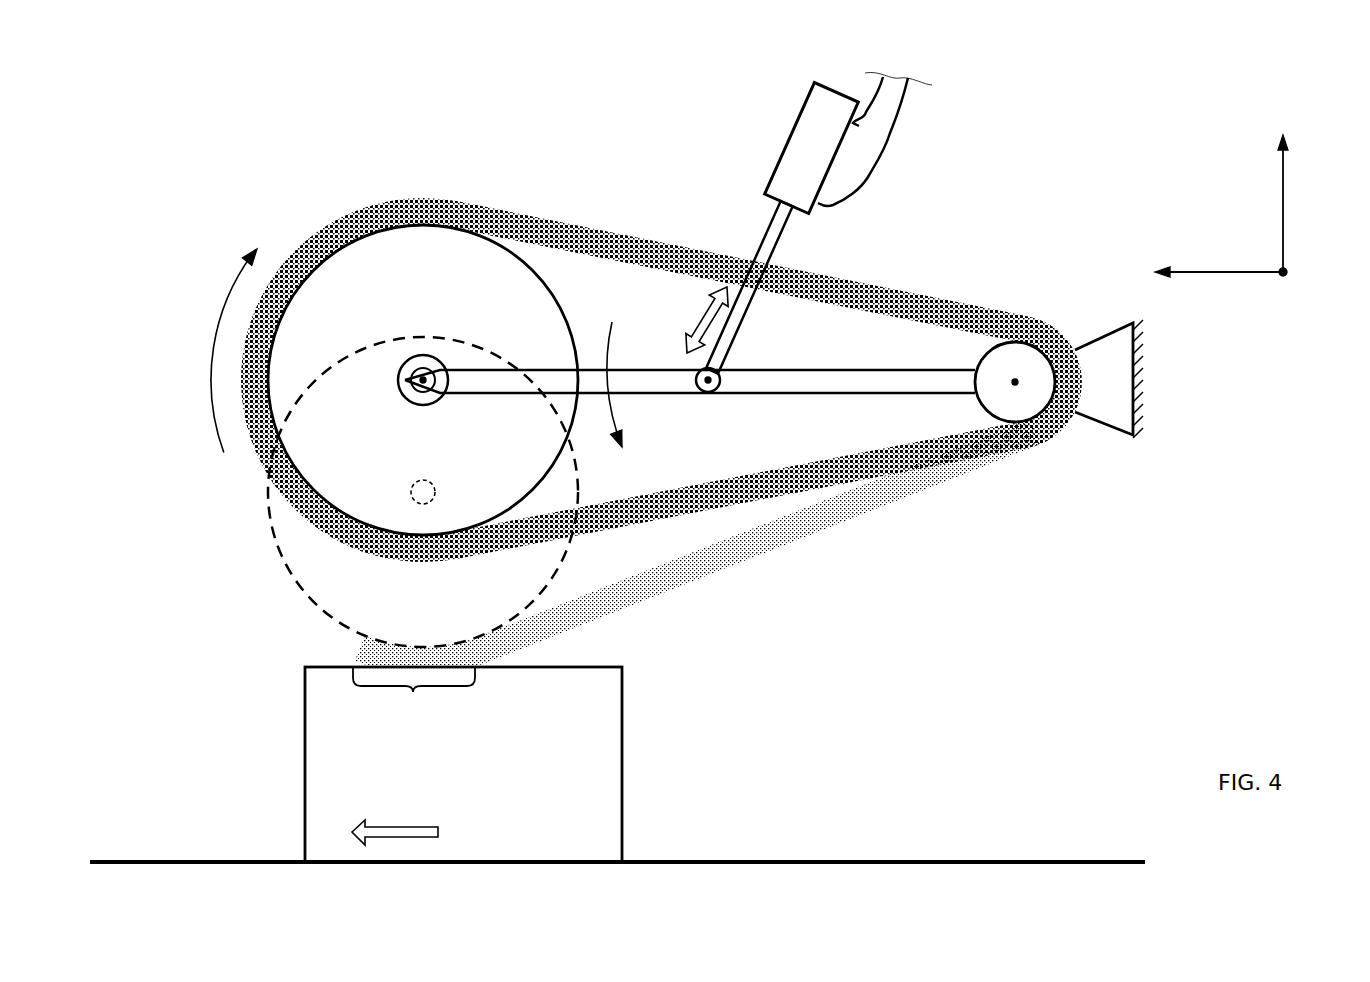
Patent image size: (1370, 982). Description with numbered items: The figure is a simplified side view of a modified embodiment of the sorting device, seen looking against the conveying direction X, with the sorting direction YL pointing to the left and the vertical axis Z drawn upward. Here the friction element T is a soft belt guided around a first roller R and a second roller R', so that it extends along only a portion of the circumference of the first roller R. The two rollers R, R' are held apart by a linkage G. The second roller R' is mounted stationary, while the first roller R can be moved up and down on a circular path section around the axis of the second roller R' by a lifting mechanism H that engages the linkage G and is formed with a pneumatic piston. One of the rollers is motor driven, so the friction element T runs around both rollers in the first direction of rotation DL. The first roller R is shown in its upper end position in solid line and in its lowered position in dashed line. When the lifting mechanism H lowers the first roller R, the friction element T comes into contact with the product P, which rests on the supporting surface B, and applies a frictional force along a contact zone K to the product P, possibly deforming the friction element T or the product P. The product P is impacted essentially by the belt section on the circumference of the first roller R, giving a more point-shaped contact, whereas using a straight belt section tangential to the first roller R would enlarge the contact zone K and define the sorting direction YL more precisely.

The first roller R is at (423, 401).
The second roller R' is at (1059, 337).
The friction element T is at (970, 306).
The linkage G is at (825, 385).
The lifting mechanism H is at (707, 157).
The first direction of rotation DL is at (198, 351).
The contact zone K is at (414, 696).
The product P is at (596, 770).
The ground B is at (1028, 862).
The Z axis Z is at (1290, 172).
The sorting direction YL is at (1195, 277).
The conveying direction X is at (1290, 275).